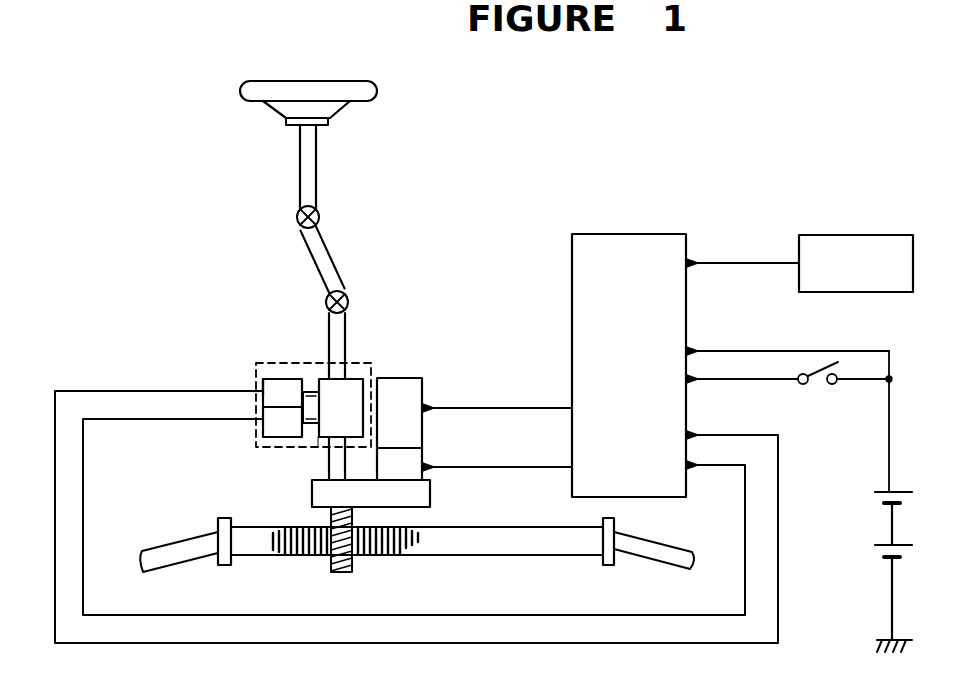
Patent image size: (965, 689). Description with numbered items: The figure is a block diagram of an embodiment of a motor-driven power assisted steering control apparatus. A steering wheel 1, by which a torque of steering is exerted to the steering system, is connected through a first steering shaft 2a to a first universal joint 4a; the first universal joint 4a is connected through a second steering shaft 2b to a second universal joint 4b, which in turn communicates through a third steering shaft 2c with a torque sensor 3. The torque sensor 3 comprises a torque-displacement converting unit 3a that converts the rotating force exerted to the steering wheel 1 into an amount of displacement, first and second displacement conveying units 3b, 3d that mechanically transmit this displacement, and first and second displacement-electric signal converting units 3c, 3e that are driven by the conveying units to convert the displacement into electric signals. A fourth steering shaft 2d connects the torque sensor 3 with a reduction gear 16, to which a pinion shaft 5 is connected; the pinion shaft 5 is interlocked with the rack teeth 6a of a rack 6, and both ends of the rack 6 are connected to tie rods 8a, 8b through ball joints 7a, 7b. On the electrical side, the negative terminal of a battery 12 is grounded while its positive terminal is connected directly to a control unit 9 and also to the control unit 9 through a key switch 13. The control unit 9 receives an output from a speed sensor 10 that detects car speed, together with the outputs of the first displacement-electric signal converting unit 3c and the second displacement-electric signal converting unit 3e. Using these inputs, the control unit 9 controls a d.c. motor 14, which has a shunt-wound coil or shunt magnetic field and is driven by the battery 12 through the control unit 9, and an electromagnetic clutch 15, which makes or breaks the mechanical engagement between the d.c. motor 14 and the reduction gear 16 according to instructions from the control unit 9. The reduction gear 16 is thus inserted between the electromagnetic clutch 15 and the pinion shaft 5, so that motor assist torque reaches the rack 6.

The steering wheel 1 is at (355, 98).
The first steering shaft 2a is at (300, 167).
The second steering shaft 2b is at (344, 266).
The third steering shaft 2c is at (329, 333).
The fourth steering shaft 2d is at (336, 466).
The torque sensor 3 is at (256, 363).
The torque-displacement converting unit 3a is at (355, 392).
The first displacement conveying unit 3b is at (305, 440).
The first displacement-electric signal converting unit 3c is at (266, 430).
The second displacement conveying unit 3d is at (311, 392).
The second displacement-electric signal converting unit 3e is at (263, 382).
The first universal joint 4a is at (320, 218).
The second universal joint 4b is at (351, 302).
The pinion shaft 5 is at (335, 574).
The rack 6 is at (487, 555).
The rack teeth 6a is at (386, 555).
The ball joint 7a is at (232, 558).
The ball joint 7b is at (606, 563).
The tie rod 8a is at (184, 552).
The tie rod 8b is at (660, 551).
The control unit 9 is at (610, 234).
The speed sensor 10 is at (851, 235).
The battery 12 is at (897, 528).
The key switch 13 is at (818, 383).
The d.c. motor 14 is at (410, 388).
The electromagnetic clutch 15 is at (407, 436).
The reduction gear 16 is at (414, 496).